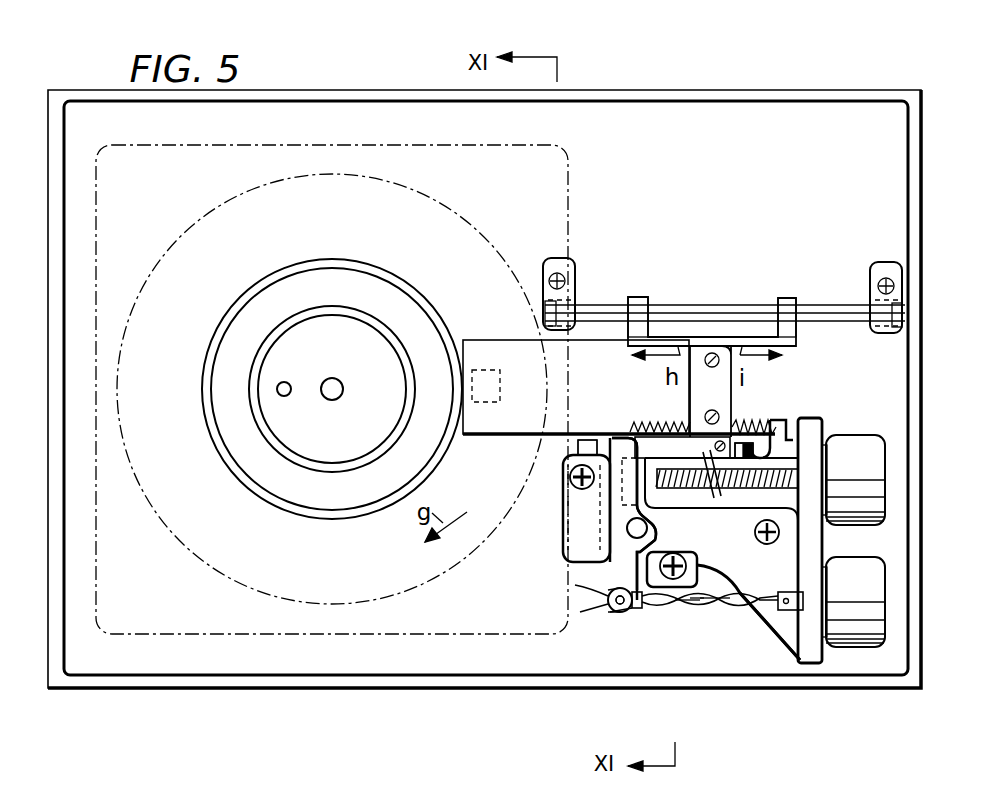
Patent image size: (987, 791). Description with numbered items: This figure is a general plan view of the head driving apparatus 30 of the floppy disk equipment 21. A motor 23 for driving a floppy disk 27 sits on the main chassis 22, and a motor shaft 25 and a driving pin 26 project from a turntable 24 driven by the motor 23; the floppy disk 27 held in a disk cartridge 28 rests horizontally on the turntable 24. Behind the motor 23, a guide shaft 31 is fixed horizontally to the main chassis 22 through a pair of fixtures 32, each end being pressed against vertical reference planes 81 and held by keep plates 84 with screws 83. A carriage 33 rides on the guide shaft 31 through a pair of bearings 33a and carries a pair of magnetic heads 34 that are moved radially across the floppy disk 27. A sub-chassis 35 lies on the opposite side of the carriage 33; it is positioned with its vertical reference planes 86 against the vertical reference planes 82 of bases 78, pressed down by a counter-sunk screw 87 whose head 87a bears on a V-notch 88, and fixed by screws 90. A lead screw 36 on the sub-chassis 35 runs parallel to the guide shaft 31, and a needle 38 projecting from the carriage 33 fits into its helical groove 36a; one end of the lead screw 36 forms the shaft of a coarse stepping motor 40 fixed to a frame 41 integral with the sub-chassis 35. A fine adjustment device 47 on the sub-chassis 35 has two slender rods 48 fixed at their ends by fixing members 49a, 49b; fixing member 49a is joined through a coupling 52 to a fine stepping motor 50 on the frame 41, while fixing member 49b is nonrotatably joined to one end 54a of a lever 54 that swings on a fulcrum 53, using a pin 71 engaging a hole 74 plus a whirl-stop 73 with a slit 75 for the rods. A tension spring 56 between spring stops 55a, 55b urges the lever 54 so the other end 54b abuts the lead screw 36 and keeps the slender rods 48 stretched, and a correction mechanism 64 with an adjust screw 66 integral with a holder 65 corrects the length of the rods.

The floppy disk equipment 21 is at (694, 90).
The main chassis 22 is at (893, 147).
The motor 23 is at (335, 268).
The turntable 24 is at (350, 320).
The motor shaft 25 is at (337, 399).
The driving pin 26 is at (284, 397).
The floppy disk 27 is at (487, 240).
The disk cartridge 28 is at (250, 636).
The head driving apparatus 30 is at (874, 389).
The guide shaft 31 is at (700, 302).
The fixtures 32 is at (578, 263).
The carriage 33 is at (630, 338).
The bearings 33a is at (648, 300).
The magnetic heads 34 is at (481, 366).
The sub-chassis 35 is at (728, 603).
The lead screw 36 is at (792, 470).
The helical groove 36a is at (745, 490).
The needle 38 is at (690, 561).
The coarse stepping motor 40 is at (890, 465).
The frame 41 is at (818, 544).
The fine adjustment device 47 is at (662, 622).
The slender rods 48 is at (713, 604).
The fixing member 49a is at (772, 608).
The fixing member 49b is at (624, 614).
The fine stepping motor 50 is at (890, 587).
The coupling 52 is at (783, 612).
The fulcrum 53 is at (592, 530).
The lever 54 is at (616, 565).
The one end of the lever 54a is at (612, 606).
The other end of the lever 54b is at (615, 440).
The spring stop 55a is at (624, 430).
The spring stop 55b is at (780, 428).
The tension spring 56 is at (760, 440).
The correction mechanism 64 is at (565, 495).
The holder 65 is at (649, 528).
The adjust screw 66 is at (598, 520).
The pin 71 is at (609, 601).
The whirl-stop 73 is at (636, 610).
The hole 74 is at (621, 613).
The slit 75 is at (606, 592).
The bases 78 is at (582, 442).
The vertical reference planes 81 is at (578, 305).
The vertical reference planes 82 is at (574, 470).
The screws 83 is at (556, 273).
The keep plates 84 is at (548, 312).
The vertical reference planes 86 is at (590, 438).
The counter-sunk screw 87 is at (690, 604).
The head 87a is at (697, 620).
The V-notch 88 is at (726, 588).
The screws 90 is at (574, 480).